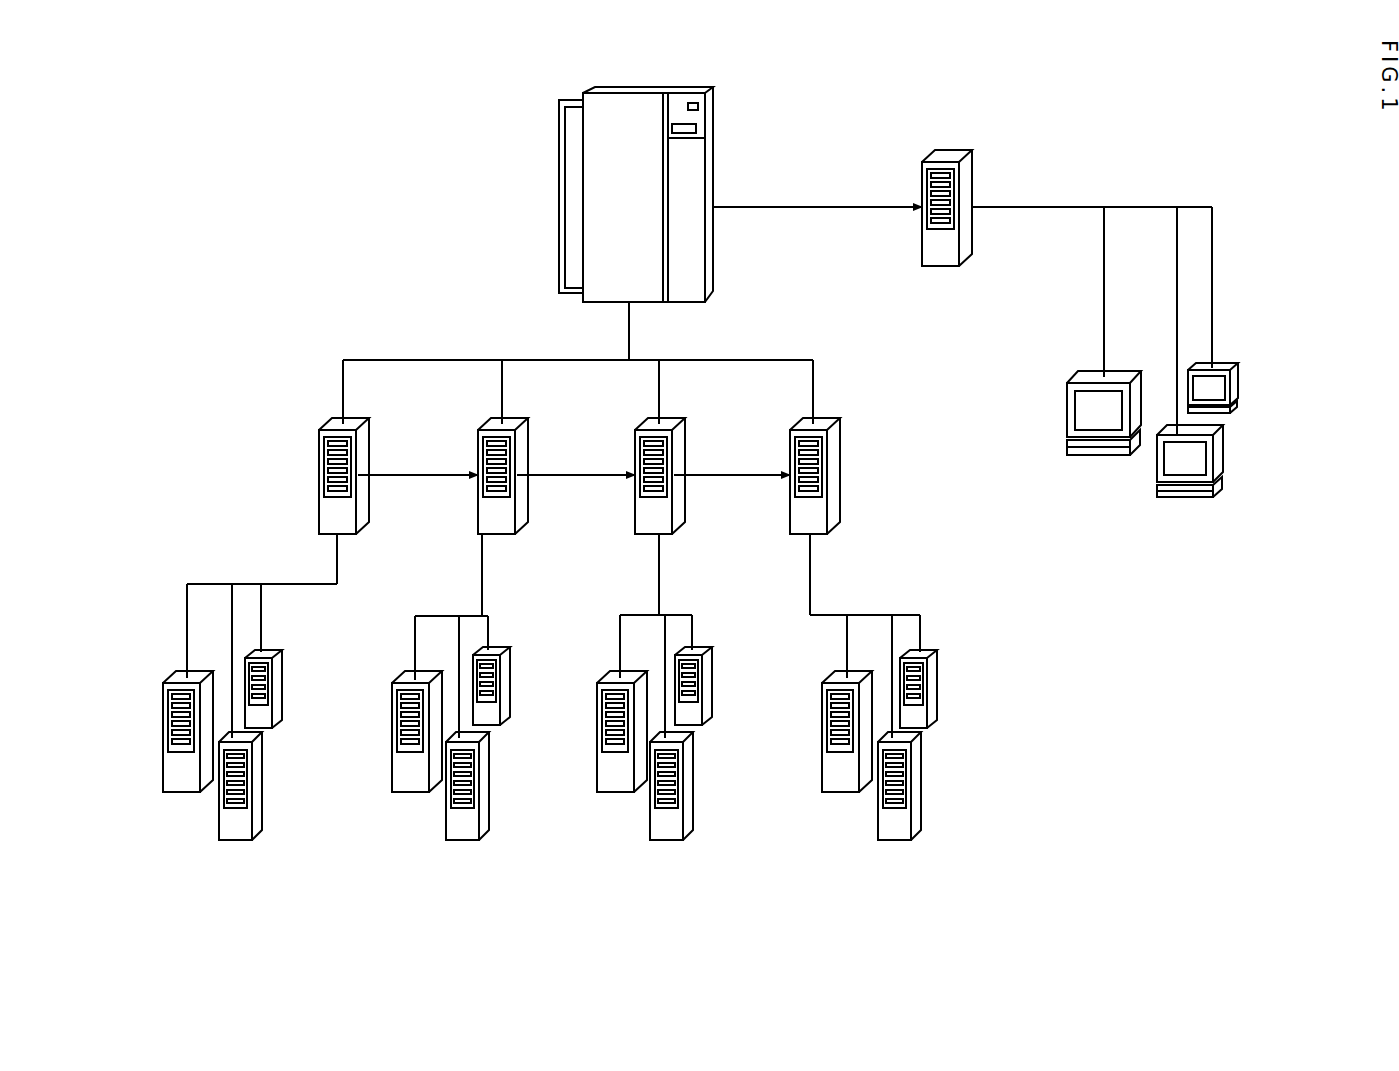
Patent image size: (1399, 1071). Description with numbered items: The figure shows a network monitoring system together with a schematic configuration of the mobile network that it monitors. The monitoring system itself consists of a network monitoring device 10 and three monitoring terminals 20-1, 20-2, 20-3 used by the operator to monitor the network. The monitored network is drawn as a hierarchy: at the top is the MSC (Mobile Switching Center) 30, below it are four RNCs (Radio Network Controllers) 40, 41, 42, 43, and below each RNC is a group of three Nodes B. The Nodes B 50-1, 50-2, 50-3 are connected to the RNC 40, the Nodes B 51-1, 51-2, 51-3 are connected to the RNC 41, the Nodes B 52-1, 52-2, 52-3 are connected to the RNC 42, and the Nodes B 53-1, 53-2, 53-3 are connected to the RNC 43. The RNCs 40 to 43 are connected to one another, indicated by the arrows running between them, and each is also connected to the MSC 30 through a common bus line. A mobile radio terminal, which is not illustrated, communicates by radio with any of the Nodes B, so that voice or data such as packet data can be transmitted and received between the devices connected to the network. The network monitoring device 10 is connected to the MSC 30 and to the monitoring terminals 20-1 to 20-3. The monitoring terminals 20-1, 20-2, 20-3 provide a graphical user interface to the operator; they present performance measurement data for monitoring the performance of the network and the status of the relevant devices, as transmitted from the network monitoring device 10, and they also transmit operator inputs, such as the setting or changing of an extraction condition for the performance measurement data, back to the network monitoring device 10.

The MSC (Mobile Switching Center) 30 is at (650, 88).
The network monitoring device 10 is at (947, 150).
The RNC (Radio Network Controller) 40 is at (356, 418).
The RNC (Radio Network Controller) 41 is at (514, 418).
The RNC (Radio Network Controller) 42 is at (671, 418).
The RNC (Radio Network Controller) 43 is at (826, 418).
The Node B 50-1 is at (182, 793).
The Node B 50-2 is at (236, 841).
The Node B 50-3 is at (272, 726).
The Node B 51-1 is at (410, 793).
The Node B 51-2 is at (463, 841).
The Node B 51-3 is at (500, 723).
The Node B 52-1 is at (615, 793).
The Node B 52-2 is at (667, 841).
The Node B 52-3 is at (702, 723).
The Node B 53-1 is at (840, 793).
The Node B 53-2 is at (895, 841).
The Node B 53-3 is at (928, 726).
The monitoring terminal 20-1 is at (1098, 456).
The monitoring terminal 20-2 is at (1182, 498).
The monitoring terminal 20-3 is at (1240, 386).